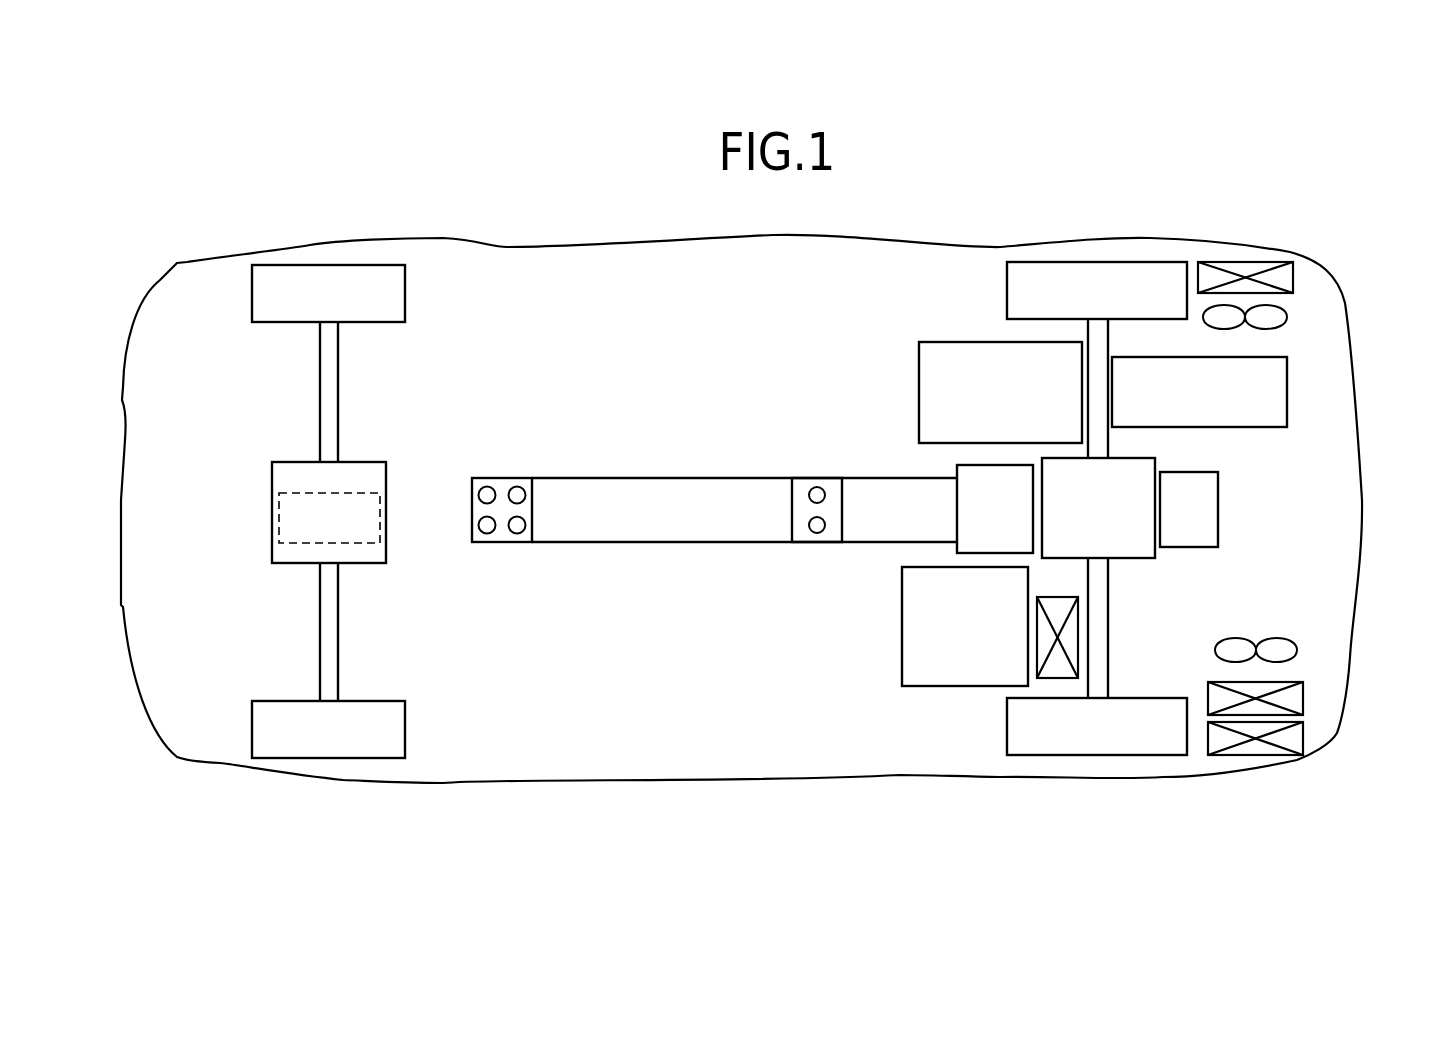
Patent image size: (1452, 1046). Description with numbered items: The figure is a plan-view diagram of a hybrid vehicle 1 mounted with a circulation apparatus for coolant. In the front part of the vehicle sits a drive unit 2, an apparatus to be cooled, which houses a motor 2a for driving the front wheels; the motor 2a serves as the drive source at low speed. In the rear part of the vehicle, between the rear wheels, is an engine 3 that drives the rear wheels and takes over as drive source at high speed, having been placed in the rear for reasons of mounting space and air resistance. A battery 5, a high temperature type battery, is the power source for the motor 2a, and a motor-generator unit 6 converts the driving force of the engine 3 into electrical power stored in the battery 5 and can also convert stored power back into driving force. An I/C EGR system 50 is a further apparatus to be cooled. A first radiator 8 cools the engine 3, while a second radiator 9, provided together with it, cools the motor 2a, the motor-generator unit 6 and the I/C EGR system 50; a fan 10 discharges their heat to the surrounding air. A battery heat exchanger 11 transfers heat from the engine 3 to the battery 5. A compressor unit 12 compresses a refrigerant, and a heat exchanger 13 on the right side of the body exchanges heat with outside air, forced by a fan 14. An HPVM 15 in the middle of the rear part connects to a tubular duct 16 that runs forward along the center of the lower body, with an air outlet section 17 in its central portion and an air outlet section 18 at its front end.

The hybrid vehicle 1 is at (1377, 281).
The drive unit 2 is at (295, 462).
The motor 2a is at (270, 513).
The engine 3 is at (1127, 558).
The battery 5 is at (900, 648).
The motor-generator unit 6 is at (962, 342).
The first radiator 8 is at (1303, 698).
The second radiator 9 is at (1303, 738).
The fan 10 is at (1297, 645).
The battery heat exchanger 11 is at (1035, 650).
The compressor unit 12 is at (1287, 407).
The heat exchanger 13 is at (1257, 262).
The fan 14 is at (1287, 320).
The HPVM 15 is at (977, 464).
The duct 16 is at (667, 545).
The air outlet section 17 is at (820, 545).
The air outlet section 18 is at (493, 545).
The I/C EGR system 50 is at (1202, 547).